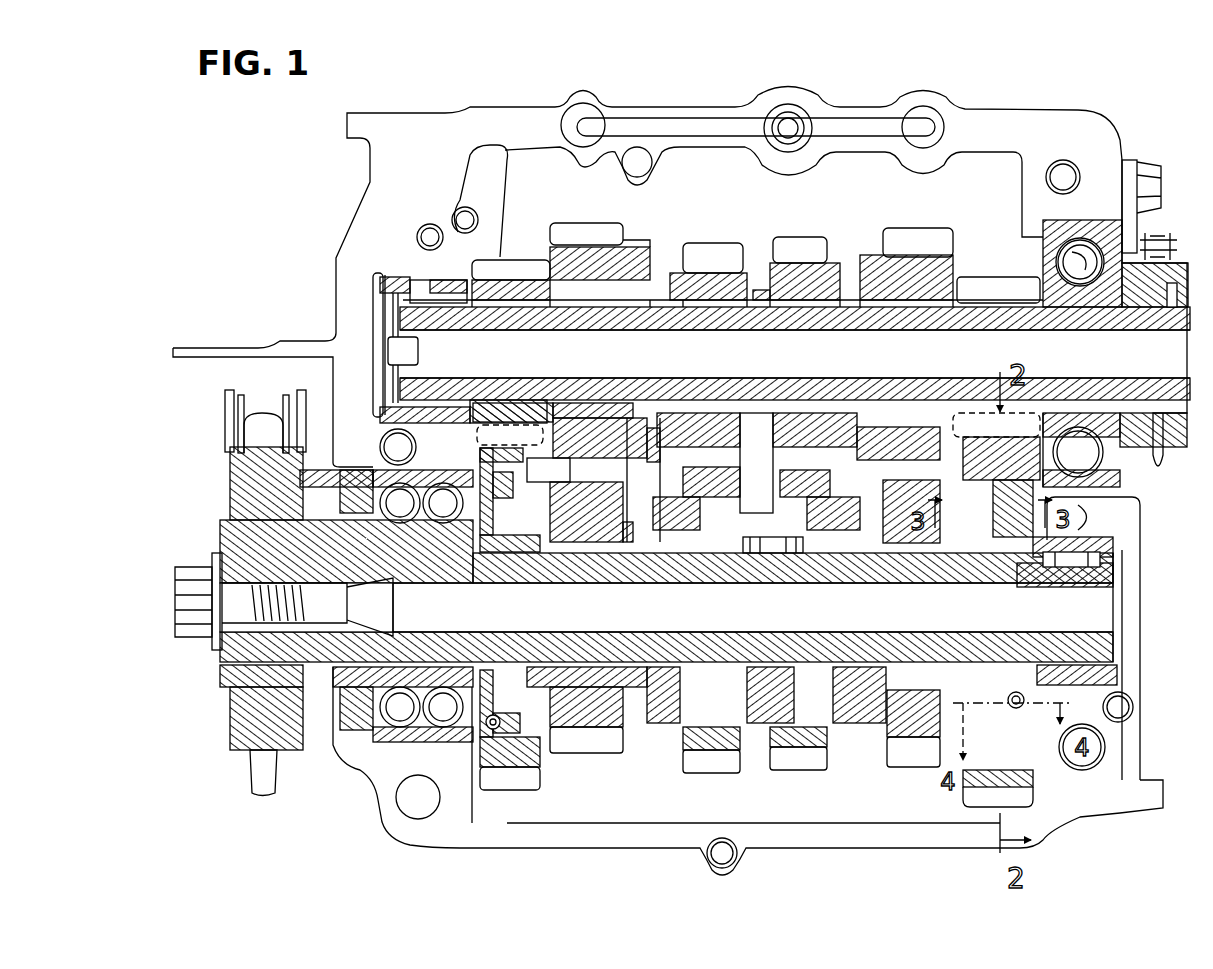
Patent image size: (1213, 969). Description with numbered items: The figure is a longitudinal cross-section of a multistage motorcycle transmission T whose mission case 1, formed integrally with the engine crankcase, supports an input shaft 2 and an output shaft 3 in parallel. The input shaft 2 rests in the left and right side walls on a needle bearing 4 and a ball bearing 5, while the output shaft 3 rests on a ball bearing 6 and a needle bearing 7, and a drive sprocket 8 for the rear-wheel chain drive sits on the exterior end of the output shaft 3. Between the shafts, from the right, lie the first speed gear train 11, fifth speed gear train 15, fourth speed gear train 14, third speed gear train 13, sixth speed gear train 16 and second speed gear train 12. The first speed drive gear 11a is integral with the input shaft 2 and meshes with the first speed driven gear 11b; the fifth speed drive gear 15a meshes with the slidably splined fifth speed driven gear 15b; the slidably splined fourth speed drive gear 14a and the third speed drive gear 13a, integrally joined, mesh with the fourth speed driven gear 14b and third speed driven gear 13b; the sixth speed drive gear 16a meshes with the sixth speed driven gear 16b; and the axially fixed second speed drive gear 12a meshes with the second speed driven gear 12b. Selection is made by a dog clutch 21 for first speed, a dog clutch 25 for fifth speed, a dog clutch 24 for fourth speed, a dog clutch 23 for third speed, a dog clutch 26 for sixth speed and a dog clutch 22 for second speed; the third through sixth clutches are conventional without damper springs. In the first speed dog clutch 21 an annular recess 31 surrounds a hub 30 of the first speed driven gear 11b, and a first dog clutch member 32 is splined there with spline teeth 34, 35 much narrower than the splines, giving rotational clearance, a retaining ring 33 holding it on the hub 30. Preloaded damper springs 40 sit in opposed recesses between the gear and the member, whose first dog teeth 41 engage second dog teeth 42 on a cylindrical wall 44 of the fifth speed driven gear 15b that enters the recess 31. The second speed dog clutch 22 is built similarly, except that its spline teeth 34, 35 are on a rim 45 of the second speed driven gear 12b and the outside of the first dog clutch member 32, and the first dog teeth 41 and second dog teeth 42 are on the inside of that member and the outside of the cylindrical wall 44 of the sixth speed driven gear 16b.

The transmission T is at (316, 298).
The mission case 1 is at (378, 225).
The input shaft 2 is at (1117, 333).
The output shaft 3 is at (1100, 577).
The needle bearing 4 is at (427, 327).
The ball bearing 5 is at (1083, 277).
The ball bearing 6 is at (447, 517).
The needle bearing 7 is at (1080, 580).
The drive sprocket 8 is at (260, 433).
The first speed gear train 11 is at (995, 276).
The first speed drive gear 11a is at (977, 283).
The first speed driven gear 11b is at (1027, 797).
The second speed gear train 12 is at (517, 253).
The second speed drive gear 12a is at (503, 260).
The second speed driven gear 12b is at (513, 783).
The third speed gear train 13 is at (717, 253).
The third speed drive gear 13a is at (725, 253).
The third speed driven gear 13b is at (707, 767).
The fourth speed gear train 14 is at (810, 232).
The fourth speed drive gear 14a is at (797, 245).
The fourth speed driven gear 14b is at (793, 763).
The fifth speed gear train 15 is at (903, 226).
The fifth speed drive gear 15a is at (920, 237).
The fifth speed driven gear 15b is at (910, 767).
The sixth speed gear train 16 is at (598, 224).
The sixth speed drive gear 16a is at (570, 237).
The sixth speed driven gear 16b is at (590, 747).
The dog clutch for a first speed 21 is at (980, 755).
The dog clutch for a second speed 22 is at (536, 735).
The dog clutch for a third speed 23 is at (669, 731).
The dog clutch for a fourth speed 24 is at (835, 733).
The dog clutch for a fifth speed 25 is at (850, 282).
The dog clutch for a sixth speed 26 is at (667, 266).
The hub 30 is at (1020, 580).
The annular recess 31 is at (480, 597).
The first dog clutch member 32 is at (553, 545).
The retaining ring 33 is at (593, 550).
The spline teeth 34 is at (540, 407).
The spline teeth 35 is at (997, 633).
The damper spring 40 is at (482, 755).
The first dog teeth 41 is at (480, 665).
The second dog teeth 42 is at (962, 560).
The cylindrical wall 44 is at (965, 435).
The rim 45 is at (555, 495).